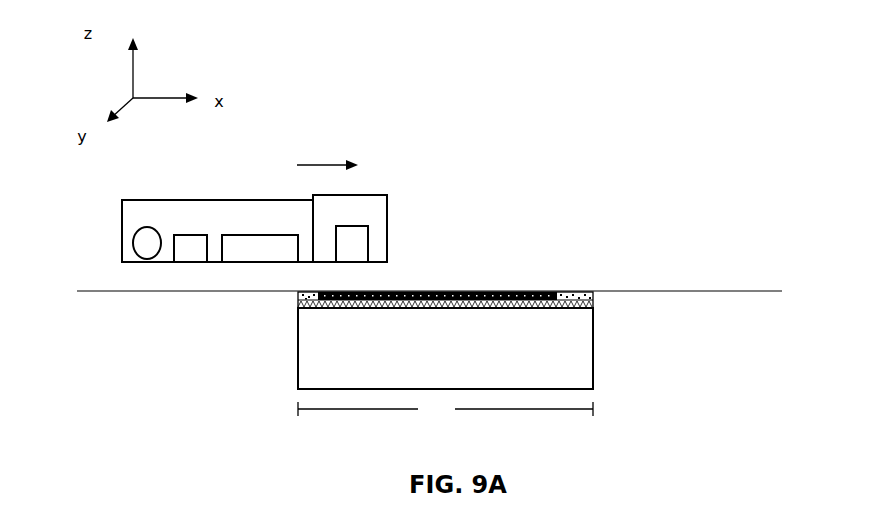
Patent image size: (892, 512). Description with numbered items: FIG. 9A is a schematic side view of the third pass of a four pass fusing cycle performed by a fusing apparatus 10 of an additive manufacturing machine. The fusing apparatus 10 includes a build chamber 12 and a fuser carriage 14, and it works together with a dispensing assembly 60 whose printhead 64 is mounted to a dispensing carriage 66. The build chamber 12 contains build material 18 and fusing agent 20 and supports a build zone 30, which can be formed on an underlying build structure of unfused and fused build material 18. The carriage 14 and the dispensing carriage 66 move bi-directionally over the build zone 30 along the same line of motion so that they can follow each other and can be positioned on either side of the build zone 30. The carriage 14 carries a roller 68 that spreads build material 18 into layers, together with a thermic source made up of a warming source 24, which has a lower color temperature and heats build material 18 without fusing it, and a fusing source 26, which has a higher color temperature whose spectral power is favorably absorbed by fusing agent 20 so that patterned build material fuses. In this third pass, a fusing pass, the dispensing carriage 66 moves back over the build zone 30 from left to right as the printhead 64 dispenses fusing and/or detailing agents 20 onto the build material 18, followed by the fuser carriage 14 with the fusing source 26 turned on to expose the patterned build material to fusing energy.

The fusing apparatus 10 is at (261, 160).
The build chamber 12 is at (445, 348).
The carriage 14 is at (202, 200).
The build material 18 is at (593, 292).
The fusing agent 20 is at (525, 291).
The warming source 24 is at (196, 247).
The fusing source 26 is at (255, 247).
The build zone 30 is at (445, 410).
The dispensing assembly 60 is at (405, 249).
The printhead 64 is at (353, 238).
The dispensing carriage 66 is at (388, 217).
The roller 68 is at (147, 245).